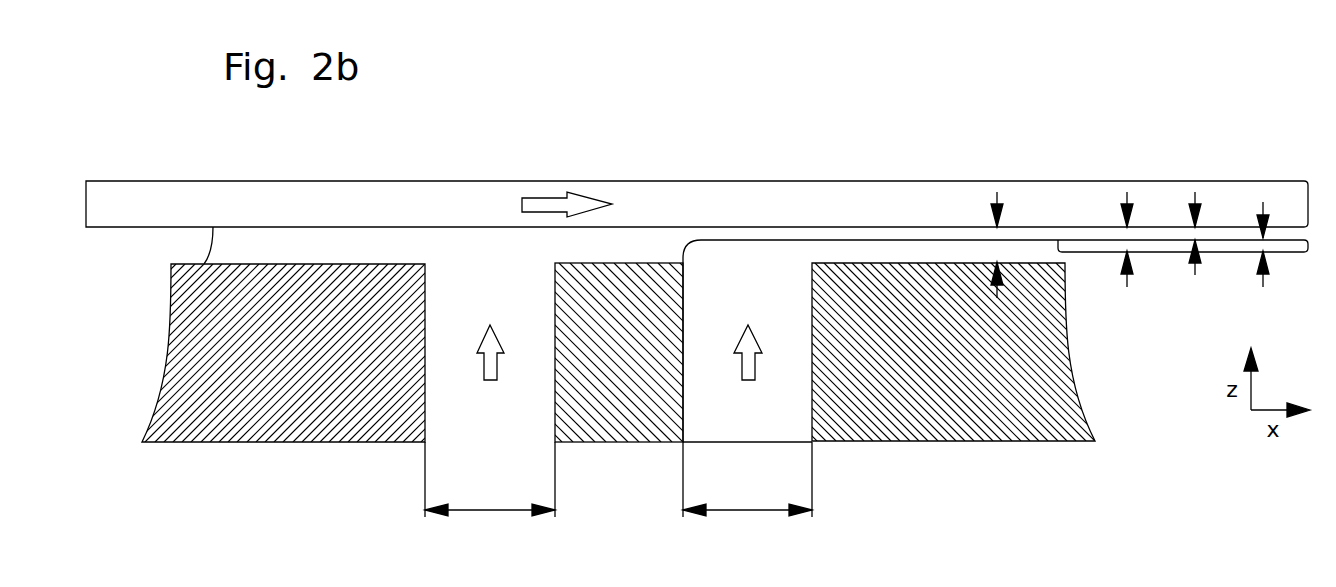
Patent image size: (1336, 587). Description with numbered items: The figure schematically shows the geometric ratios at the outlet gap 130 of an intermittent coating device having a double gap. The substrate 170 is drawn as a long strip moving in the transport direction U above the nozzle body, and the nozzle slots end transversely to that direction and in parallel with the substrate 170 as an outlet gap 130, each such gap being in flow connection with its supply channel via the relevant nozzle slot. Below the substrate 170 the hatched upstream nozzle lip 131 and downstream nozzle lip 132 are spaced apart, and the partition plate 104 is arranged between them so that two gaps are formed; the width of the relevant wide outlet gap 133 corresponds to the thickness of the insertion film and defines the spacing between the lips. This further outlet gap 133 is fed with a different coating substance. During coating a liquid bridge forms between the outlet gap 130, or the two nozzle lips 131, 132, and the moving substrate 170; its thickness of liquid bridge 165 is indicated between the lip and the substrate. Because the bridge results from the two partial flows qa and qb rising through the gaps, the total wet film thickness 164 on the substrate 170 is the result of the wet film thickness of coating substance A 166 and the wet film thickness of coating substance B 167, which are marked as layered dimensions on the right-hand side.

The partition plate 104 is at (620, 418).
The outlet gap 130 is at (493, 292).
The upstream nozzle lip 131 is at (277, 408).
The downstream nozzle lip 132 is at (940, 418).
The wide outlet gap 133 is at (618, 479).
The wet film thickness 164 is at (1132, 235).
The thickness of liquid bridge 165 is at (997, 275).
The wet film thickness of coating substance A 166 is at (1197, 237).
The wet film thickness of coating substance B 167 is at (1263, 242).
The substrate 170 is at (697, 205).